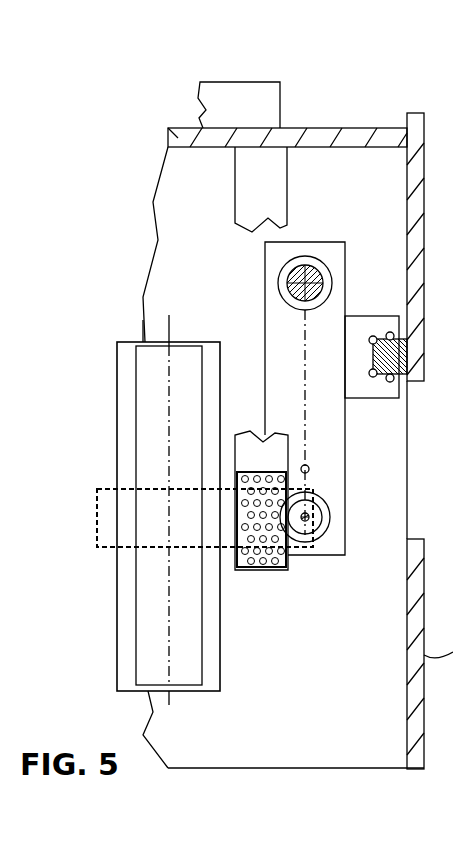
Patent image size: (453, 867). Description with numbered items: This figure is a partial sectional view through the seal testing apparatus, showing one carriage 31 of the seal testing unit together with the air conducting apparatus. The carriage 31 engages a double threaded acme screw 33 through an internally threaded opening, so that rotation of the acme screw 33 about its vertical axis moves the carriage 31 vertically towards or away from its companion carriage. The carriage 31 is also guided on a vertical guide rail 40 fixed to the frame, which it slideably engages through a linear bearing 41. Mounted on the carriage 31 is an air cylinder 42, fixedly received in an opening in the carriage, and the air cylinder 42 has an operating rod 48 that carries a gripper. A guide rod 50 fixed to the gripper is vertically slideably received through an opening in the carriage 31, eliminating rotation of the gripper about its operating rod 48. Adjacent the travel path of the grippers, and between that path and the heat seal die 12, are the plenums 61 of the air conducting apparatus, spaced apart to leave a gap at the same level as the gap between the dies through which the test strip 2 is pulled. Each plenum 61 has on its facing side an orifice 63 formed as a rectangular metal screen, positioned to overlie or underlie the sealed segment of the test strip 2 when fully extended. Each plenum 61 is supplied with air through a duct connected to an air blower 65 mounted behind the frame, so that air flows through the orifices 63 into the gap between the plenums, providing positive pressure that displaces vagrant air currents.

The test strip 2 is at (97, 538).
The die 12 is at (127, 640).
The carriage 31 is at (296, 356).
The acme screw 33 is at (318, 272).
The vertical guide rail 40 is at (380, 339).
The linear bearing 41 is at (365, 392).
The air cylinder 42 is at (330, 503).
The operating rod 48 is at (308, 520).
The guide rod 50 is at (309, 466).
The plenum 61 is at (243, 197).
The orifice 63 is at (262, 551).
The air blower 65 is at (232, 87).